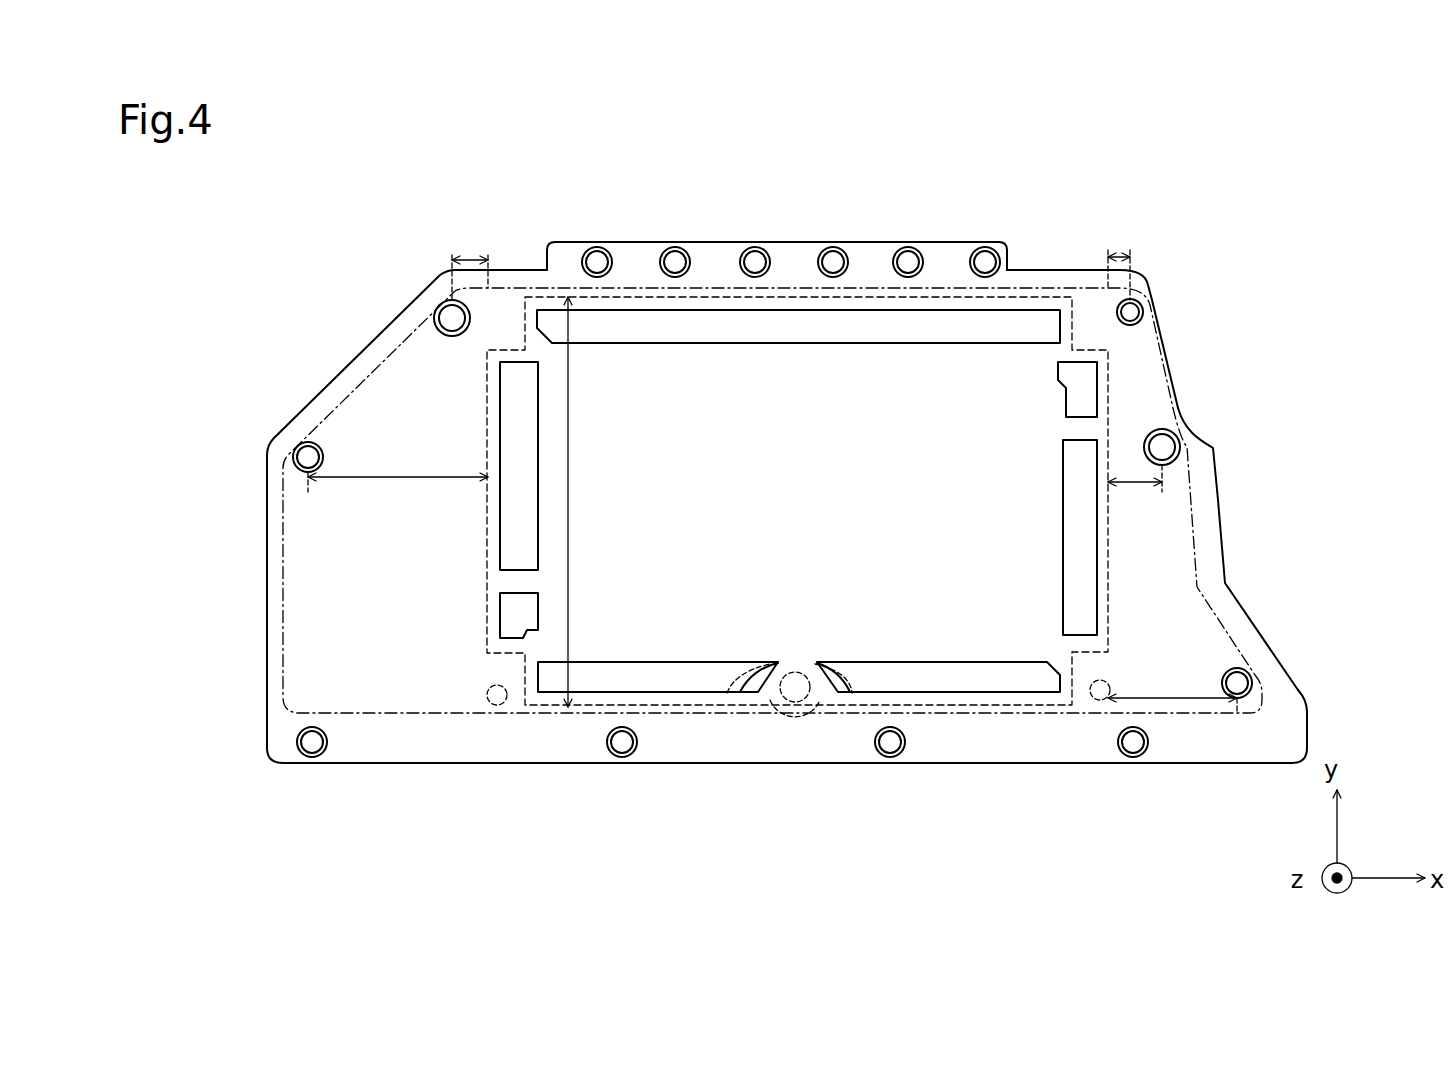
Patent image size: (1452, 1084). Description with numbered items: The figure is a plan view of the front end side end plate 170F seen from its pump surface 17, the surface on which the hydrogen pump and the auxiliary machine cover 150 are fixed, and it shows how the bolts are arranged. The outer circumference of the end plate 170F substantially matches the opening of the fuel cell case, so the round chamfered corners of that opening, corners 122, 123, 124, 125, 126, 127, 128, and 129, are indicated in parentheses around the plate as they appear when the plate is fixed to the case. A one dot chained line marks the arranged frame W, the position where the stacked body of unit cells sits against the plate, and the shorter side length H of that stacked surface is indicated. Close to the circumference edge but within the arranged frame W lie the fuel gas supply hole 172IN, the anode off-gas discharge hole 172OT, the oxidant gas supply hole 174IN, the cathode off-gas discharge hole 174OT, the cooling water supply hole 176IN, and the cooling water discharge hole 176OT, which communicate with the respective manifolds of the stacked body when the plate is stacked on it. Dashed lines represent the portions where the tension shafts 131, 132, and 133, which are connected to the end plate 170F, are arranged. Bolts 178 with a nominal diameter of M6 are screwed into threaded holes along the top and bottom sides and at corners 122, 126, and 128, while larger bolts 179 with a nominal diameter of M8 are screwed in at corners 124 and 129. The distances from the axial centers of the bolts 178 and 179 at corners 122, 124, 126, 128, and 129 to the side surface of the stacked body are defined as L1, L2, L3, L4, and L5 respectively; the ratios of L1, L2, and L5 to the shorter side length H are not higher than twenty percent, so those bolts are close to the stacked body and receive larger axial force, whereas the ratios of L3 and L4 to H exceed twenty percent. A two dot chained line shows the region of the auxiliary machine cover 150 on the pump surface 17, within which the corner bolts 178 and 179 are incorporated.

The front end side end plate 170F is at (1237, 176).
The pump surface 17 is at (1087, 282).
The corner 122 is at (1152, 283).
The corner 123 is at (1180, 410).
The corner 124 is at (1216, 448).
The corner 125 is at (1226, 588).
The corner 126 is at (1306, 710).
The corner 127 is at (280, 703).
The corner 128 is at (270, 440).
The corner 129 is at (432, 286).
The auxiliary machine cover 150 is at (1220, 628).
The tension shaft 131 is at (732, 683).
The tension shaft 132 is at (497, 707).
The tension shaft 133 is at (1100, 702).
The fuel gas supply hole 172IN is at (1088, 386).
The anode off-gas discharge hole 172OT is at (512, 620).
The oxidant gas supply hole 174IN is at (848, 688).
The cathode off-gas discharge hole 174OT is at (1025, 330).
The cooling water supply hole 176IN is at (1088, 534).
The cooling water discharge hole 176OT is at (512, 524).
The bolt 178 is at (985, 247).
The bolt 179 is at (452, 300).
The distance L1 is at (1118, 258).
The distance L2 is at (1148, 492).
The distance L3 is at (1188, 715).
The distance L4 is at (333, 478).
The distance L5 is at (469, 256).
The shorter side length H is at (574, 510).
The arranged frame W is at (988, 712).